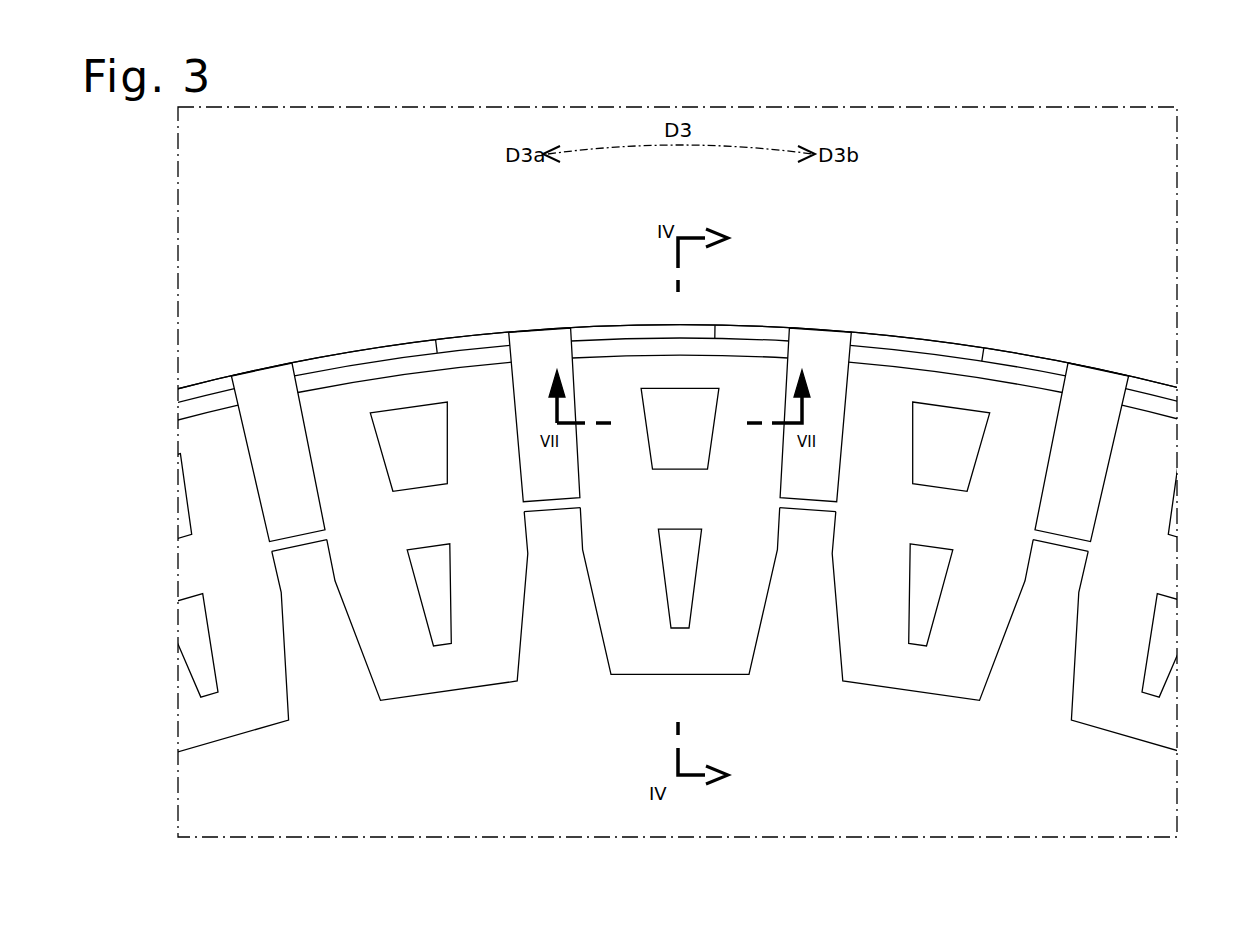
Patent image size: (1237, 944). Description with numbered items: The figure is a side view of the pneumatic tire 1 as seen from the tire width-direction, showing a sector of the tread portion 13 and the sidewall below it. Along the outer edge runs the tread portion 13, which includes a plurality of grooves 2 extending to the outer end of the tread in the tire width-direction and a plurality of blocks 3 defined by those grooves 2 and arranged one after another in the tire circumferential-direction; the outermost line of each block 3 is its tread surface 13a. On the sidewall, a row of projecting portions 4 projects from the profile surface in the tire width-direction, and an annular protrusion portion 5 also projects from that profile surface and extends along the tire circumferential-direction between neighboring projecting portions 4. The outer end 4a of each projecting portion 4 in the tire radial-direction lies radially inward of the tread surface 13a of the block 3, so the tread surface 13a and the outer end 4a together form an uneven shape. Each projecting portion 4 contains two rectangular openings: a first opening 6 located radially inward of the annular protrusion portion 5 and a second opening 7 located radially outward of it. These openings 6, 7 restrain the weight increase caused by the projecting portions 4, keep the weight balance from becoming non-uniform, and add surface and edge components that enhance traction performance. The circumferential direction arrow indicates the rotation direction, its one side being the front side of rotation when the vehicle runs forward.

The stator 1 is at (1158, 144).
The groove 2 is at (281, 358).
The block 3 is at (402, 336).
The projecting portion 4 is at (369, 698).
The outer end of the projecting portion 4a is at (437, 339).
The annular protrusion portion 5 is at (1048, 543).
The first opening 6 is at (416, 600).
The second opening 7 is at (387, 480).
The tread portion 13 is at (254, 304).
The tread surface 13a is at (223, 376).